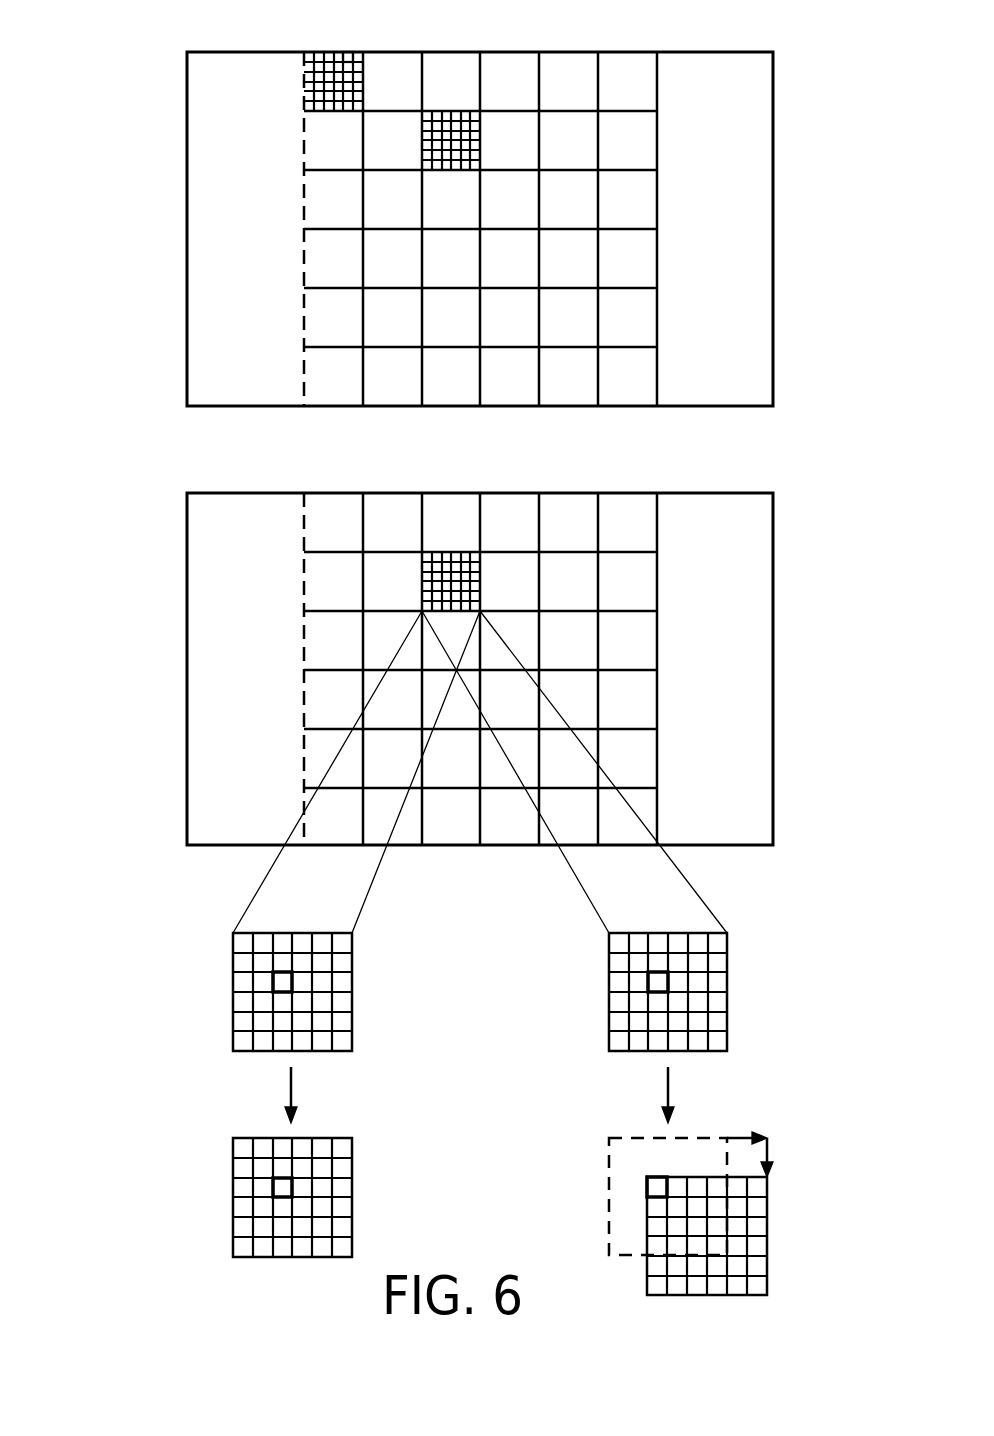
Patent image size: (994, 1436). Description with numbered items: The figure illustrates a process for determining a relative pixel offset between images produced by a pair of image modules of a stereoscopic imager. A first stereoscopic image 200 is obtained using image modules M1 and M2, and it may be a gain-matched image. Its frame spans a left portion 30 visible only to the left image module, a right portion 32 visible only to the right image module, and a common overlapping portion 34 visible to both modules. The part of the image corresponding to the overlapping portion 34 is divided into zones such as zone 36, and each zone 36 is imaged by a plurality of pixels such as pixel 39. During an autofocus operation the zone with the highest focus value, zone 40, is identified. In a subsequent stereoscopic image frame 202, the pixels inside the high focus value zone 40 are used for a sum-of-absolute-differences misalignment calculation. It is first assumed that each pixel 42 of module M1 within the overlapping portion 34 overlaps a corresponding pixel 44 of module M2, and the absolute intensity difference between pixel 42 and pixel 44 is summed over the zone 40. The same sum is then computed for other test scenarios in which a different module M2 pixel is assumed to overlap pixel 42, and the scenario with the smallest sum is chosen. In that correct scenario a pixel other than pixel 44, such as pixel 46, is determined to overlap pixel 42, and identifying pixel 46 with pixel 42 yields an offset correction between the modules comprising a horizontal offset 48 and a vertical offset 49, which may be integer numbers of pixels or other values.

The first stereoscopic image 200 is at (145, 90).
The subsequent stereoscopic image frame 202 is at (145, 531).
The left portion of field of view 30 is at (199, 245).
The right portion of field of view 32 is at (762, 245).
The common overlapping portion of field of view 34 is at (672, 123).
The zone 36 is at (322, 52).
The pixel 39 is at (357, 58).
The high focus value zone 40 is at (456, 110).
The pixel of first image module 42 is at (281, 982).
The pixel of second image module 44 is at (656, 982).
The overlapping pixel in correct scenario 46 is at (656, 1187).
The horizontal offset 48 is at (742, 1136).
The vertical offset 49 is at (771, 1155).